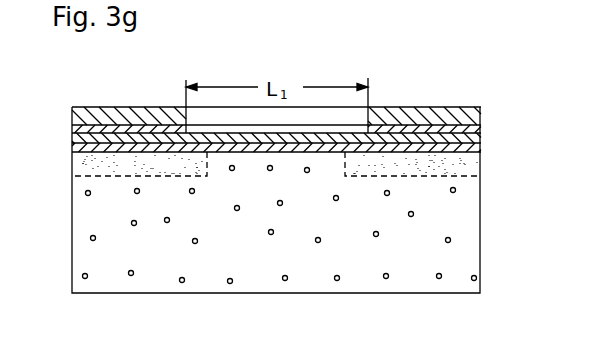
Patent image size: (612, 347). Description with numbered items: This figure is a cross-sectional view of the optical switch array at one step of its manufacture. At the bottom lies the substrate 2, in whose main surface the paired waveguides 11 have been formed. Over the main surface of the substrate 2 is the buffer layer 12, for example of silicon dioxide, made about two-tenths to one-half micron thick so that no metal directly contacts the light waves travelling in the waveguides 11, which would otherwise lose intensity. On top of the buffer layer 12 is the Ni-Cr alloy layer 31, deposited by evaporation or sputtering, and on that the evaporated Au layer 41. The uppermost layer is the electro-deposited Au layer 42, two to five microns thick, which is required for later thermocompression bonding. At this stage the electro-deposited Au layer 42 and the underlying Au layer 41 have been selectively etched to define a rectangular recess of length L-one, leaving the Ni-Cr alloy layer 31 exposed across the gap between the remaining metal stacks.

The substrate 2 is at (465, 257).
The paired waveguides 11 is at (473, 170).
The buffer layer 12 is at (480, 149).
The Ni-Cr alloy layer 31 is at (480, 137).
The Au layer 41 is at (105, 127).
The electro-deposited Au layer 42 is at (148, 117).